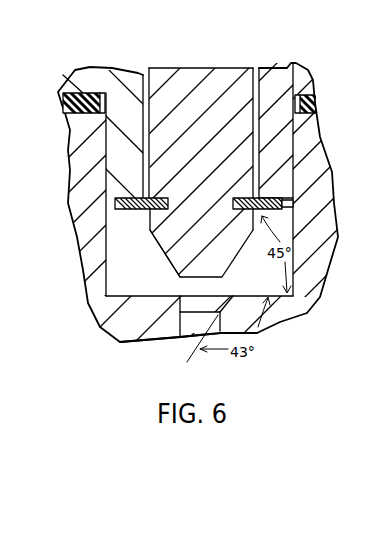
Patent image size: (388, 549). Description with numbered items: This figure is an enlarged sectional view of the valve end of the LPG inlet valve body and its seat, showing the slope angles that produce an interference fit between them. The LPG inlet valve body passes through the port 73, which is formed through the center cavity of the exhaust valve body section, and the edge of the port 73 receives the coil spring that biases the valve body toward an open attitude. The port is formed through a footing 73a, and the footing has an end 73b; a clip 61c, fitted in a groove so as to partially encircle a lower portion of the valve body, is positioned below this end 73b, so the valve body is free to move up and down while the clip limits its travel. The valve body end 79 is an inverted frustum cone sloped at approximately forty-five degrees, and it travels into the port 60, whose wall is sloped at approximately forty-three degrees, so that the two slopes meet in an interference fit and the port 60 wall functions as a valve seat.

The port 73 is at (229, 70).
The footing 73a is at (275, 102).
The end of footing 73b is at (194, 293).
The clip 61c is at (294, 205).
The LPG inlet valve body end 79 is at (177, 252).
The port 60 is at (183, 305).